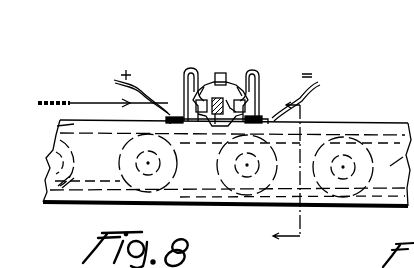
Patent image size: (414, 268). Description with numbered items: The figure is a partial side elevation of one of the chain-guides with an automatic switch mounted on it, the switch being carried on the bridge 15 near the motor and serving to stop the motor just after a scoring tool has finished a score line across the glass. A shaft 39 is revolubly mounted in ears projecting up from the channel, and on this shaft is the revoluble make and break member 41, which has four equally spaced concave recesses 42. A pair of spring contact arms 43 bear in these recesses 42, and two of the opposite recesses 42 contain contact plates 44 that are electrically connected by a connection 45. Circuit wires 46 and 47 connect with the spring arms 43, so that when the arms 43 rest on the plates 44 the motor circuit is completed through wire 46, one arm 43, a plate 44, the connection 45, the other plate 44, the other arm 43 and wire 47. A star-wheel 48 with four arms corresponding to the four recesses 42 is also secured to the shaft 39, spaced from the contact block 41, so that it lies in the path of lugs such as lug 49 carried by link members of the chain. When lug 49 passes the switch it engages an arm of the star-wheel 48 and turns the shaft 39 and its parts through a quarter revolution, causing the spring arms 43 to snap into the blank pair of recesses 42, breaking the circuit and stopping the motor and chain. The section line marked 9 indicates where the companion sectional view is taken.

The bridge 15 is at (306, 133).
The shaft 39 is at (230, 104).
The make and break member 41 is at (212, 90).
The concave recesses 42 is at (221, 73).
The spring contact arms 43 is at (185, 82).
The contact plates 44 is at (242, 100).
The connection 45 is at (215, 124).
The circuit wire 46 is at (104, 89).
The circuit wire 47 is at (309, 95).
The star-wheel 48 is at (224, 98).
The lug 49 is at (172, 124).
The section line 9- 9 is at (290, 169).